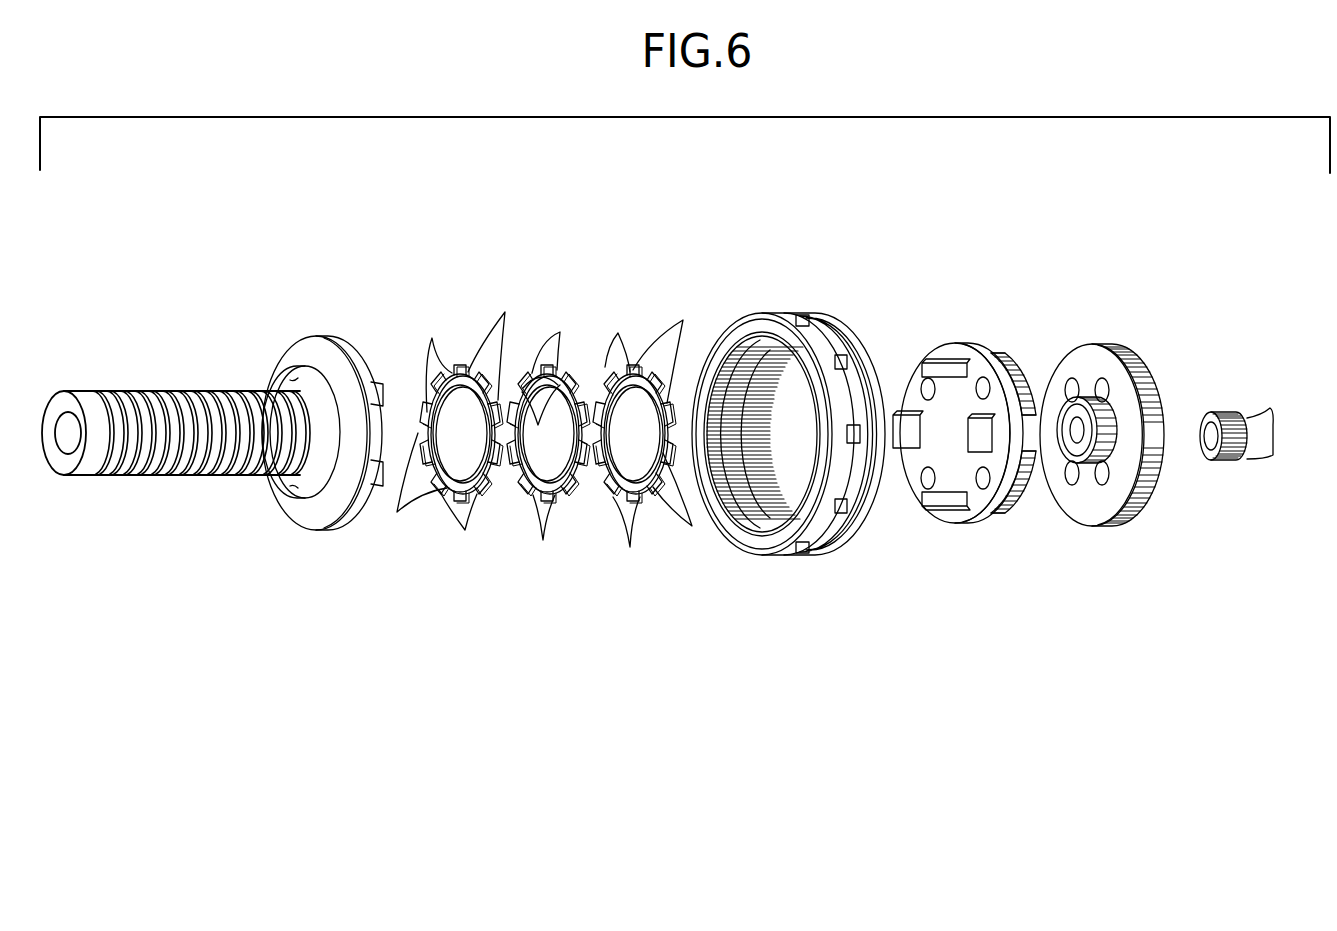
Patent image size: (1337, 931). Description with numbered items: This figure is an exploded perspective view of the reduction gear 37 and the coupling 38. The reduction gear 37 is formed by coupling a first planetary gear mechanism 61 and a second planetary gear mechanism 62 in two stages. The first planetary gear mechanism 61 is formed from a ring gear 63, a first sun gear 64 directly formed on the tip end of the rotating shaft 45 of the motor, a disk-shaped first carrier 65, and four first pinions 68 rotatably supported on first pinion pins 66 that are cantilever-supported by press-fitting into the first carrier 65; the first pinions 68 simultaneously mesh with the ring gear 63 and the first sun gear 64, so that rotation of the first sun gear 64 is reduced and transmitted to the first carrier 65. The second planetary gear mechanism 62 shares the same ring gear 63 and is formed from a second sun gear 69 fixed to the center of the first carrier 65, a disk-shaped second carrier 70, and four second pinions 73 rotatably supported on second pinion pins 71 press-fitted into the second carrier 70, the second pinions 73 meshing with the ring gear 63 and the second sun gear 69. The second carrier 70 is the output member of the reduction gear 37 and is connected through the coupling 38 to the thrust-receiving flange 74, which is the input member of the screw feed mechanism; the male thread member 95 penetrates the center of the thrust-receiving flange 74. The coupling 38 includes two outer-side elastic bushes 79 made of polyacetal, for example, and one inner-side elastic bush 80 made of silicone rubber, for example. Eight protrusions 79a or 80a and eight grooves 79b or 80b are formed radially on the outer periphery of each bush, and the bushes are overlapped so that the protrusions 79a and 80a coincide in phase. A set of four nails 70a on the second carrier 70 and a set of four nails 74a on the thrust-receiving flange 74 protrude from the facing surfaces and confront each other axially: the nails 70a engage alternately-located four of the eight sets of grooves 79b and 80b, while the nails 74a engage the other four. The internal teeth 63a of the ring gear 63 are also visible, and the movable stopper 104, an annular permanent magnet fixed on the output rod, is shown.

The reduction gear 37 is at (1018, 250).
The coupling 38 is at (590, 270).
The rotating shaft 45 is at (1262, 418).
The first planetary gear mechanism 61 is at (1196, 362).
The second planetary gear mechanism 62 is at (1020, 318).
The ring gear 63 is at (781, 305).
The internal teeth 63a is at (826, 400).
The first sun gear 64 is at (1226, 418).
The first carrier 65 is at (1100, 512).
The first pinion pins 66 is at (1102, 378).
The first pinions 68 is at (1150, 352).
The second sun gear 69 is at (1105, 428).
The second carrier 70 is at (953, 335).
The nails 70a is at (938, 363).
The second pinion pins 71 is at (924, 382).
The second pinions 73 is at (1028, 370).
The thrust-receiving flange 74 is at (296, 330).
The nails 74a is at (380, 380).
The outer-side elastic bushes 79 is at (460, 345).
The protrusions 79a is at (683, 320).
The grooves 79b is at (545, 426).
The inner-side elastic bush 80 is at (545, 327).
The protrusions 80a is at (561, 334).
The grooves 80b is at (546, 415).
The male thread member 95 is at (200, 393).
The movable stopper 104 is at (268, 392).